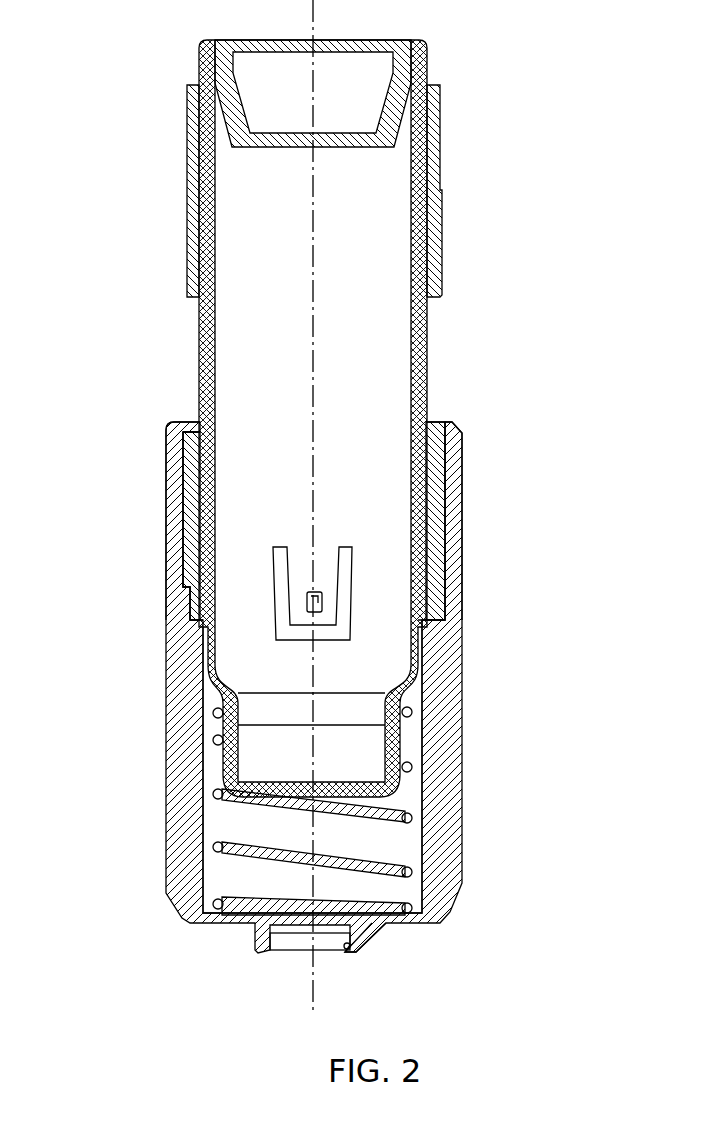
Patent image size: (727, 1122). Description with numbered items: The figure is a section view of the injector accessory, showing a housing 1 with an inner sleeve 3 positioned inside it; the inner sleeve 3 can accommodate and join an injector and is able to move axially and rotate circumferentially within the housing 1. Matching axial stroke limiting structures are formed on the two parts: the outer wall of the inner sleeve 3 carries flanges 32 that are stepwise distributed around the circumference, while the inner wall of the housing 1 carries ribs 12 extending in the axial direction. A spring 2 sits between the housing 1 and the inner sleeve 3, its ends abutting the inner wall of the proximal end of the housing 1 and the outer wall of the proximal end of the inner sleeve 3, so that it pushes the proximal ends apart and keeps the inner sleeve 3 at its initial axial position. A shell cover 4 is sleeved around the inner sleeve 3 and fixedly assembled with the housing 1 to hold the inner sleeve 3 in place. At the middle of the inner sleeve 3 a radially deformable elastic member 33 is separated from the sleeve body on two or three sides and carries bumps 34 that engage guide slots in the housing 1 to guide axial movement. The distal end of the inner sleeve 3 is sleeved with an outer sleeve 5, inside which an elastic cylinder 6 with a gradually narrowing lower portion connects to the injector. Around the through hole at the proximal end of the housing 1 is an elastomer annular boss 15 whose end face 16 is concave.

The housing 1 is at (177, 863).
The spring 2 is at (237, 797).
The inner sleeve 3 is at (203, 390).
The shell cover 4 is at (185, 442).
The outer sleeve 5 is at (192, 182).
The elastic cylinder 6 is at (222, 83).
The ribs 12 is at (423, 705).
The annular boss 15 is at (372, 942).
The end face of the boss 16 is at (350, 947).
The flanges 32 is at (422, 608).
The elastic member 33 is at (317, 568).
The bumps 34 is at (315, 605).